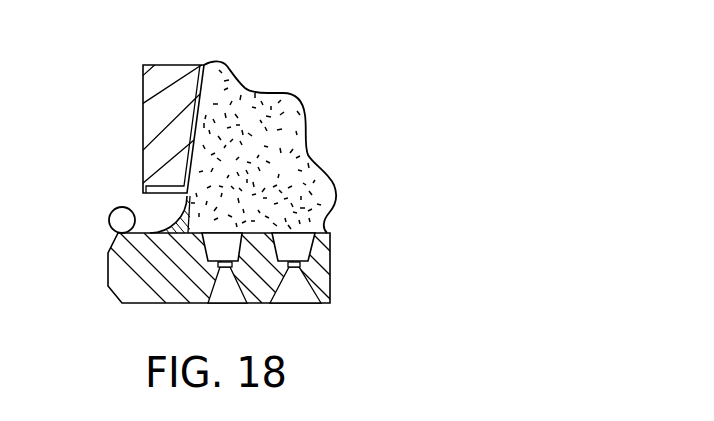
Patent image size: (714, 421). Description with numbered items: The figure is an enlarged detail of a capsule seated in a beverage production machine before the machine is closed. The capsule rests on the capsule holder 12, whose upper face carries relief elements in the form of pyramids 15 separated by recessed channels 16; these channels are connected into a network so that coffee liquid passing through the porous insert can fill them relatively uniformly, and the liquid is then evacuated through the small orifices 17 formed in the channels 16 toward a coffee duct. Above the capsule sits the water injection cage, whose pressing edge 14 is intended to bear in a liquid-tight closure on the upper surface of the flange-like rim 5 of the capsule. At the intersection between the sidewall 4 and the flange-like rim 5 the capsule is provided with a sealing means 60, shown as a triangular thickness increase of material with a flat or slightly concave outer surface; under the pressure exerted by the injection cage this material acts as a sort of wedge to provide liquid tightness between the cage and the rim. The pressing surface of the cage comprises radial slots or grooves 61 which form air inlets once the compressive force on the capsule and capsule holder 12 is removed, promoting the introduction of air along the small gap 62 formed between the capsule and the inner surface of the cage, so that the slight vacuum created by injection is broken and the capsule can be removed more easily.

The sidewall 4 is at (208, 93).
The flange-like rim 5 is at (147, 234).
The capsule holder 12 is at (97, 238).
The pressing edge 14 is at (143, 192).
The pyramids 15 is at (265, 250).
The channels 16 is at (303, 242).
The orifices 17 is at (300, 265).
The sealing means 60 is at (188, 234).
The radial slots or grooves 61 is at (152, 188).
The gap 62 is at (196, 70).